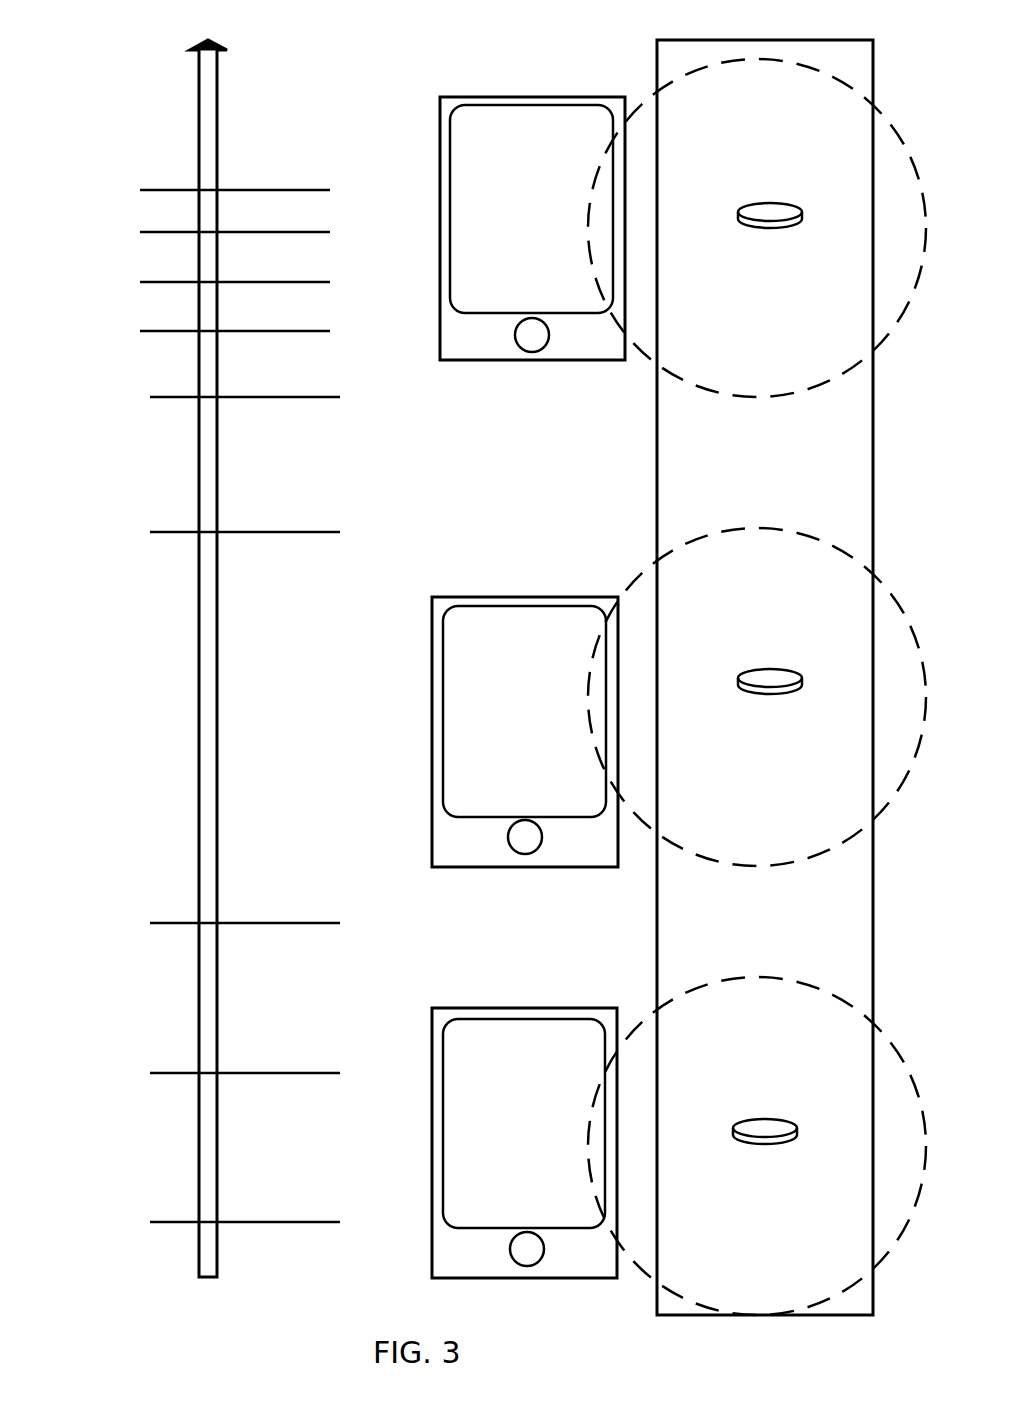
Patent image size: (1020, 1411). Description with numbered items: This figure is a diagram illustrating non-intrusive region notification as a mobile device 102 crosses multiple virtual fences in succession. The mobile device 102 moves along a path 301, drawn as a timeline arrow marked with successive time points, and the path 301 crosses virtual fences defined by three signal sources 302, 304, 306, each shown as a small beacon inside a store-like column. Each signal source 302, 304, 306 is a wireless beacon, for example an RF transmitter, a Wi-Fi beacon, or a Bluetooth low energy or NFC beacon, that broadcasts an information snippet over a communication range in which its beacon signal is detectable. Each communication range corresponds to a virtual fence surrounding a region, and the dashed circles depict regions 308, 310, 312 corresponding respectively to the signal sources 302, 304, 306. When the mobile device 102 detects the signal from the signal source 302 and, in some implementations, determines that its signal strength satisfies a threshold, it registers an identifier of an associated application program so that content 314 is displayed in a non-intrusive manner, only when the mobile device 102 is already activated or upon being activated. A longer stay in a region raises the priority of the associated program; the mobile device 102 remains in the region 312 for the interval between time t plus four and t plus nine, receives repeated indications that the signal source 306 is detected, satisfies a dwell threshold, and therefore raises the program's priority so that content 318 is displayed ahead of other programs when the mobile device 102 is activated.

The mobile device 102 is at (462, 97).
The path 301 is at (198, 163).
The signal source 302 is at (757, 1118).
The signal source 304 is at (775, 668).
The signal source 306 is at (760, 200).
The region 308 is at (640, 1022).
The region 310 is at (637, 577).
The region 312 is at (647, 102).
The content 314 is at (443, 1090).
The content 318 is at (450, 172).